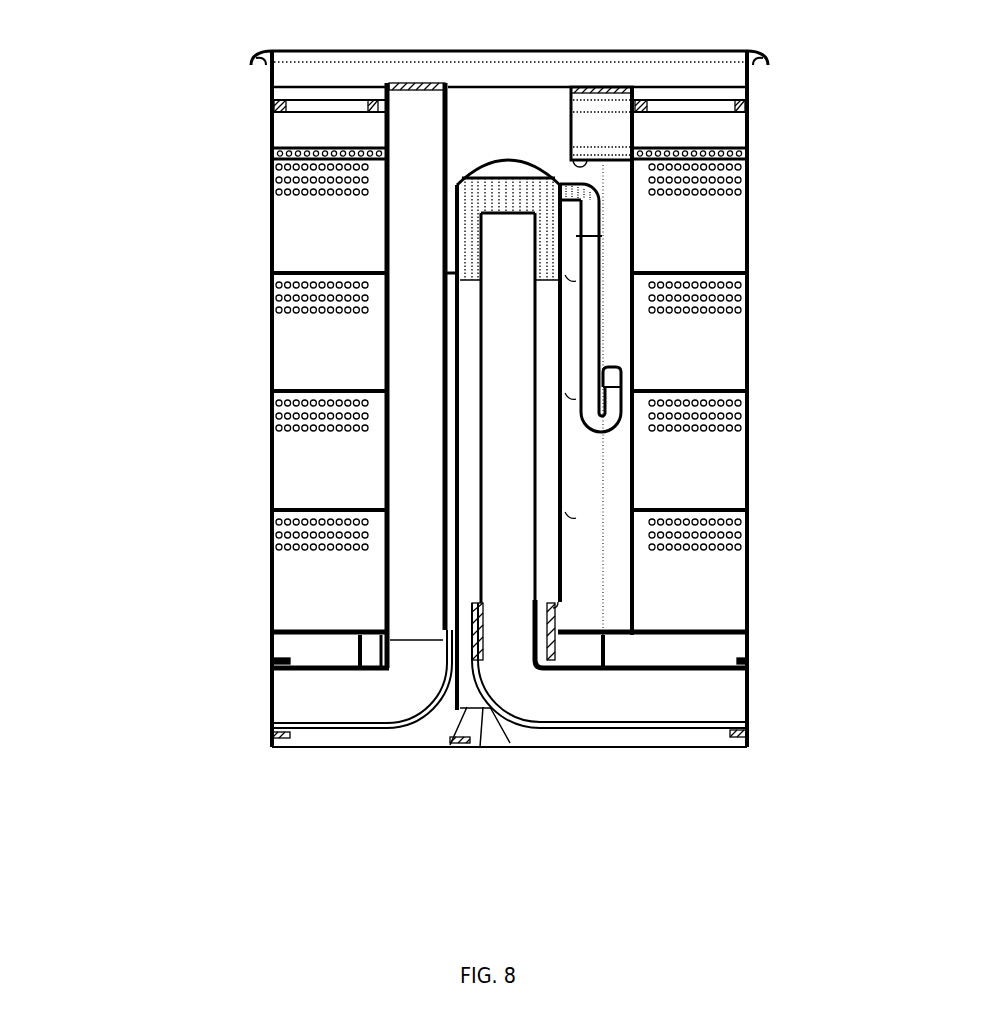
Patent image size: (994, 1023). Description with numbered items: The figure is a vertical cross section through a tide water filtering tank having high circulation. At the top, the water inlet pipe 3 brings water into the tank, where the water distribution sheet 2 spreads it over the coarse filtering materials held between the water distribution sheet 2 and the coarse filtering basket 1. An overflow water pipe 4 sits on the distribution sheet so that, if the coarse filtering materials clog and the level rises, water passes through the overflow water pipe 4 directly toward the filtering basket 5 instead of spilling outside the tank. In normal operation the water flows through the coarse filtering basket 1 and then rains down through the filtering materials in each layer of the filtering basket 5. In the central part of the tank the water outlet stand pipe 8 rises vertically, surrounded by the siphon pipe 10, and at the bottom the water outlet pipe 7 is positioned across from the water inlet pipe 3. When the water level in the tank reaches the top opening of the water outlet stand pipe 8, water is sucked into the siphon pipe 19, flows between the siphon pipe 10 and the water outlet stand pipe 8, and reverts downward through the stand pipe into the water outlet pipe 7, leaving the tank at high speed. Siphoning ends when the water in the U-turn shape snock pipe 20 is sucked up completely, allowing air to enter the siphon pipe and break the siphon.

The coarse filtering basket 1 is at (297, 132).
The water distribution sheet 2 is at (292, 93).
The water inlet pipe 3 is at (310, 705).
The overflow water pipe 4 is at (613, 128).
The filtering basket 5 is at (303, 230).
The water outlet pipe 7 is at (712, 698).
The water outlet stand pipe 8 is at (507, 369).
The siphon pipe 10 is at (520, 193).
The siphon pipe 19 is at (478, 704).
The U-turn shape snock pipe 20 is at (592, 316).